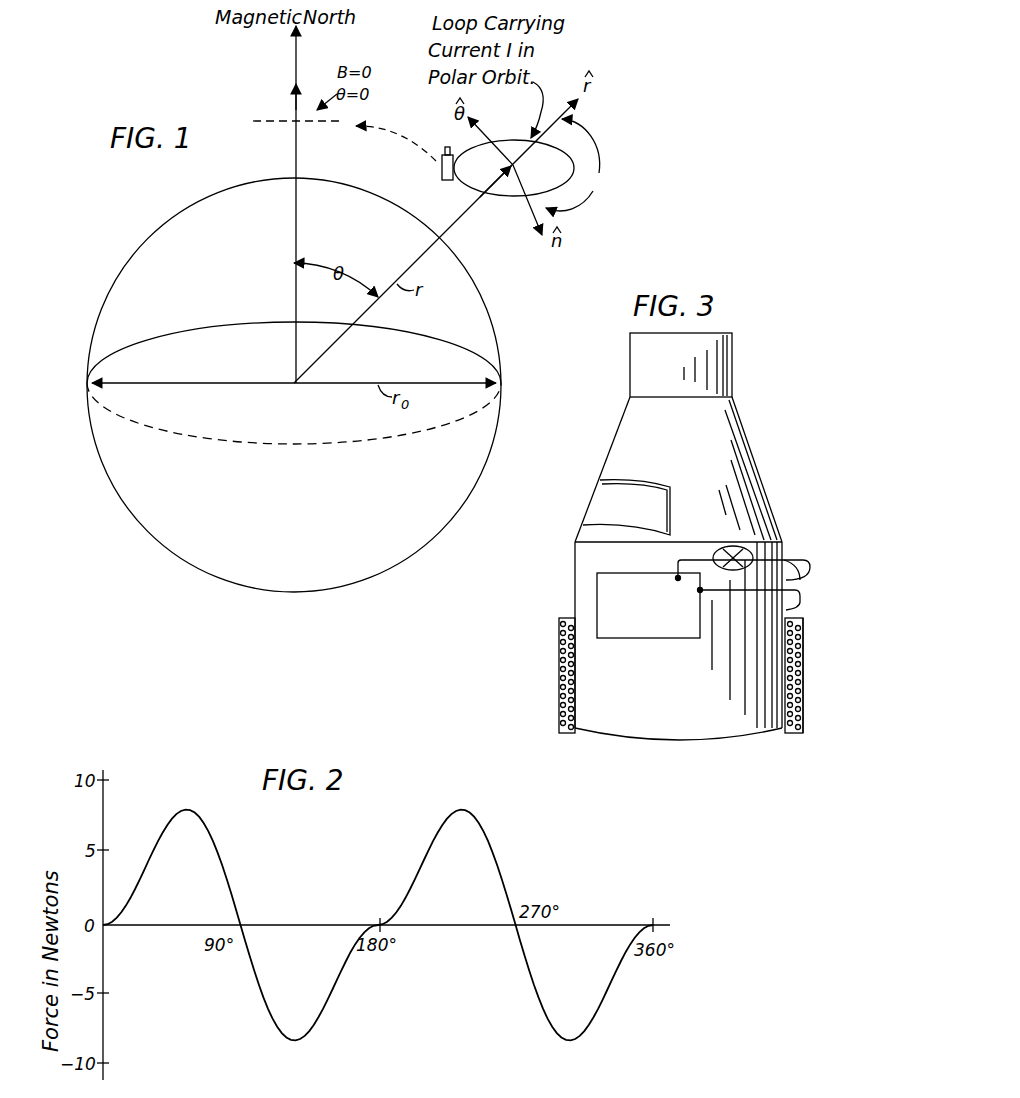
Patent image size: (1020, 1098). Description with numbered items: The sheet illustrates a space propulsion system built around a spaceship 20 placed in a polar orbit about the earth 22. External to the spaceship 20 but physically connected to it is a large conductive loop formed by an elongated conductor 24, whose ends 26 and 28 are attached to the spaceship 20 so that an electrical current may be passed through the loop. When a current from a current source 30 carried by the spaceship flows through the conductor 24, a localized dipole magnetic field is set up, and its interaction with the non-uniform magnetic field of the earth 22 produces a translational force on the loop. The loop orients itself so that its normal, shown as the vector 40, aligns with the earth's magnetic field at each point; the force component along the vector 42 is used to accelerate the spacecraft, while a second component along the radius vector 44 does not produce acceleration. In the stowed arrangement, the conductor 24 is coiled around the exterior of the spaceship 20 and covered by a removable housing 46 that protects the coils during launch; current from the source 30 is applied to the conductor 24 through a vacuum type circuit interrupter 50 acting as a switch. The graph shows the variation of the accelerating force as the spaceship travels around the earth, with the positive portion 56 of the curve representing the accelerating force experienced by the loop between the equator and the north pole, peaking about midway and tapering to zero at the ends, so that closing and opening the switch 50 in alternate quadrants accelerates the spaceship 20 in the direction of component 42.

In FIG. 1, the spaceship 20 is at (442, 162).
In FIG. 3, the spaceship 20 is at (757, 451).
In FIG. 1, the earth 22 is at (290, 594).
In FIG. 1, the elongated conductor 24 is at (267, 120).
In FIG. 3, the elongated conductor 24 is at (801, 673).
In FIG. 3, the end of conductor 26 is at (801, 608).
In FIG. 3, the end of conductor 28 is at (802, 566).
In FIG. 3, the current source 30 is at (660, 638).
In FIG. 1, the normal to the loop 40 is at (299, 96).
In FIG. 1, the accelerating force component 42 is at (494, 118).
In FIG. 1, the radial force component 44 is at (572, 119).
In FIG. 3, the removable housing 46 is at (801, 719).
In FIG. 3, the vacuum type circuit interrupter 50 is at (738, 549).
In FIG. 2, the positive portion of the curve 56 is at (216, 843).